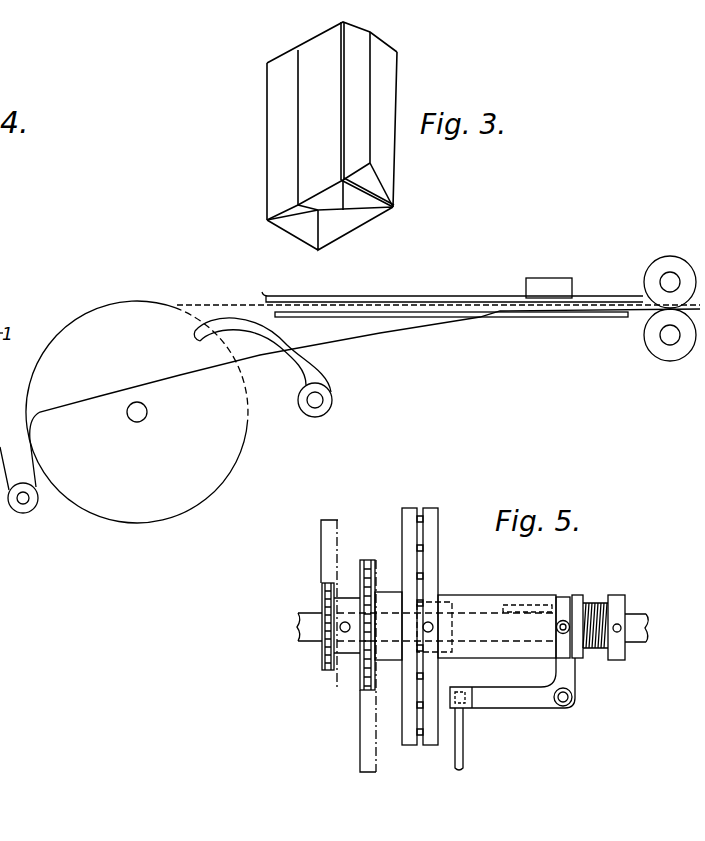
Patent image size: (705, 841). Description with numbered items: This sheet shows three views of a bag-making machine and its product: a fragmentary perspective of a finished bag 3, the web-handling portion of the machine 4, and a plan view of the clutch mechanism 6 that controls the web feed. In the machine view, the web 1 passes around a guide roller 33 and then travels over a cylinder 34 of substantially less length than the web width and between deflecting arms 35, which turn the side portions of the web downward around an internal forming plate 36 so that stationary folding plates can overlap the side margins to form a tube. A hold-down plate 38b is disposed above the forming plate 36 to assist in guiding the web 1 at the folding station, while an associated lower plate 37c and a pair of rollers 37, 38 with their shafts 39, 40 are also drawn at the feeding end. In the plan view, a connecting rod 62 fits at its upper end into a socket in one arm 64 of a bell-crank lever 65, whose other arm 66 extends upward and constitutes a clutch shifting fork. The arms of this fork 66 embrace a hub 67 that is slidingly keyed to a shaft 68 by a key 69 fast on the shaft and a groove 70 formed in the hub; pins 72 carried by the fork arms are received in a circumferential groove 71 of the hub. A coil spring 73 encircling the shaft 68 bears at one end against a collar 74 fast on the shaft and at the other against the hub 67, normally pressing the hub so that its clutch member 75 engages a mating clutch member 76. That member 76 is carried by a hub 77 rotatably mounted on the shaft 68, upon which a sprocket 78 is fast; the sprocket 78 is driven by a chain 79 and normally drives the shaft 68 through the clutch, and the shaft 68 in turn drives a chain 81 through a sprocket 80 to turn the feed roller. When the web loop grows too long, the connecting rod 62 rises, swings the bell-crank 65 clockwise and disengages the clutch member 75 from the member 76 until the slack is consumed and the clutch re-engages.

In FIG. 4, the web 1 is at (397, 327).
In FIG. 4, the feeder 3 is at (679, 252).
In FIG. 5, the mechanism (FIG. 4 reference) 4 is at (453, 562).
In FIG. 4, the feeding assembly 6 is at (188, 292).
In FIG. 4, the guide roller 33 is at (25, 513).
In FIG. 4, the cylinder 34 is at (137, 523).
In FIG. 4, the deflecting arms 35 is at (323, 367).
In FIG. 4, the internal forming plate 36 is at (212, 303).
In FIG. 4, the upper feed roller 37 is at (657, 267).
In FIG. 4, the lower feed roller 38 is at (667, 356).
In FIG. 4, the upper roller shaft 39 is at (662, 282).
In FIG. 4, the lower roller shaft 40 is at (661, 335).
In FIG. 4, the hold-down plate 38b is at (423, 297).
In FIG. 4, the lower guide plate 37c is at (448, 317).
In FIG. 5, the connecting rod 62 is at (456, 745).
In FIG. 5, the arm of bell-crank lever 64 is at (510, 704).
In FIG. 5, the bell-crank lever 65 is at (549, 720).
In FIG. 5, the clutch shifting fork 66 is at (571, 680).
In FIG. 5, the hub 67 is at (523, 596).
In FIG. 5, the shaft 68 is at (633, 614).
In FIG. 5, the key 69 is at (507, 604).
In FIG. 5, the groove 70 is at (550, 597).
In FIG. 5, the circumferential groove 71 is at (570, 595).
In FIG. 5, the pins 72 is at (556, 627).
In FIG. 5, the coil spring 73 is at (590, 604).
In FIG. 5, the collar 74 is at (614, 660).
In FIG. 5, the clutch member 75 is at (433, 521).
In FIG. 5, the mating clutch member 76 is at (407, 508).
In FIG. 5, the hub 77 is at (392, 592).
In FIG. 5, the sprocket 78 is at (361, 671).
In FIG. 5, the chain 79 is at (359, 730).
In FIG. 5, the sprocket 80 is at (322, 654).
In FIG. 5, the chain 81 is at (322, 543).